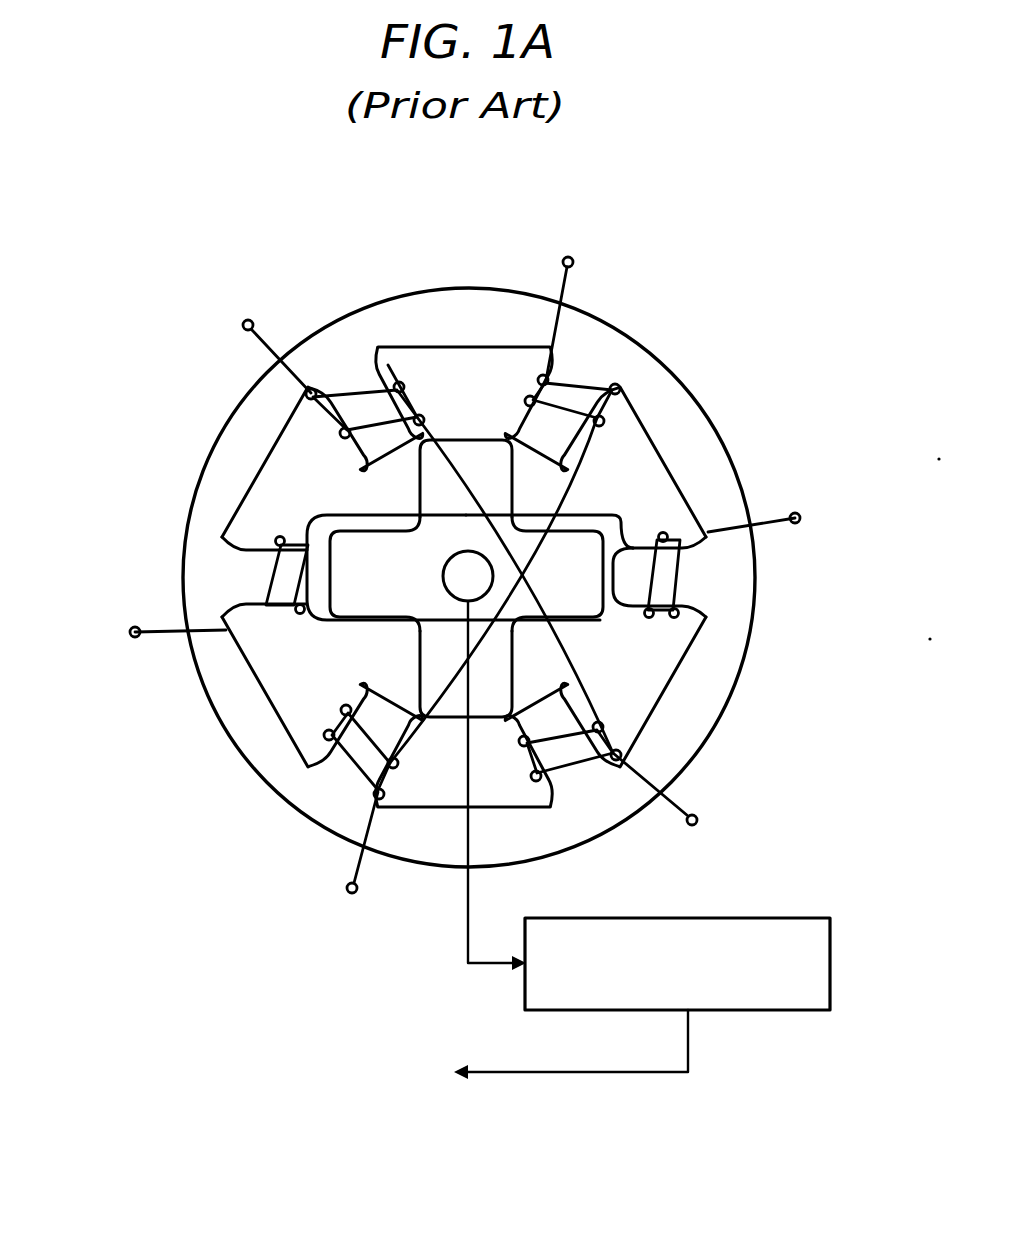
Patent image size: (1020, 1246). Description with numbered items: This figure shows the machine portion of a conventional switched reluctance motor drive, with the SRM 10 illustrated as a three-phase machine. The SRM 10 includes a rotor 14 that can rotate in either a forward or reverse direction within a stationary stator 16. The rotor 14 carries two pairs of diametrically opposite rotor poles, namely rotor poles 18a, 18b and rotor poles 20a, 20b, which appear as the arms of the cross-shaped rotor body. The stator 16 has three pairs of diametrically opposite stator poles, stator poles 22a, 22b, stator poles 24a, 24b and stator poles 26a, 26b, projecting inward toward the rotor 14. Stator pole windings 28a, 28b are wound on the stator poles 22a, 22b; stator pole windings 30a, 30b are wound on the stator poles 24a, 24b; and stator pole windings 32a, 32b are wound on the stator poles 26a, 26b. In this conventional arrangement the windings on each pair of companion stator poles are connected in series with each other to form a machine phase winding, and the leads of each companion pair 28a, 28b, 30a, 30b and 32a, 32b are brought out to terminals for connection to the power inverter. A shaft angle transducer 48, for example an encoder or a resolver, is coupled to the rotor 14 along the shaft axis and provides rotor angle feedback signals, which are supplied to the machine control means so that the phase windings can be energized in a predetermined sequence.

The SRM 10 is at (664, 303).
The rotor 14 is at (600, 620).
The stator 16 is at (246, 430).
The rotor pole 18a is at (364, 607).
The rotor pole 18b is at (588, 541).
The rotor pole 20a is at (470, 438).
The rotor pole 20b is at (446, 718).
The stator pole 22a is at (258, 540).
The stator pole 22b is at (704, 524).
The stator pole 24a is at (398, 390).
The stator pole 24b is at (568, 796).
The stator pole 26a is at (626, 394).
The stator pole 26b is at (314, 750).
The stator pole winding 28a is at (242, 690).
The stator pole winding 28b is at (688, 564).
The stator pole winding 30a is at (322, 372).
The stator pole winding 30b is at (668, 755).
The stator pole winding 32a is at (522, 386).
The stator pole winding 32b is at (335, 805).
The shaft angle transducer 48 is at (760, 1012).